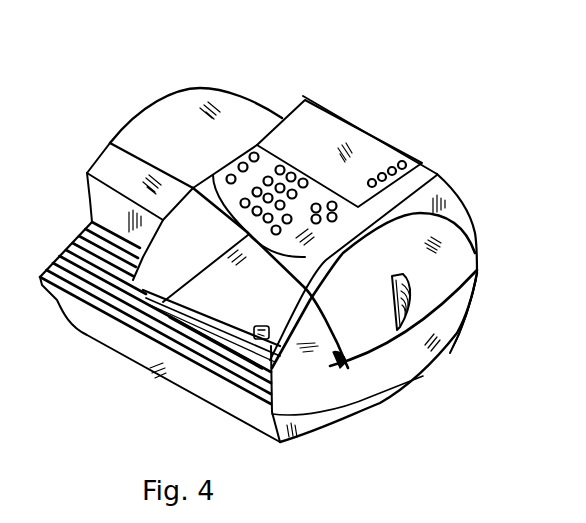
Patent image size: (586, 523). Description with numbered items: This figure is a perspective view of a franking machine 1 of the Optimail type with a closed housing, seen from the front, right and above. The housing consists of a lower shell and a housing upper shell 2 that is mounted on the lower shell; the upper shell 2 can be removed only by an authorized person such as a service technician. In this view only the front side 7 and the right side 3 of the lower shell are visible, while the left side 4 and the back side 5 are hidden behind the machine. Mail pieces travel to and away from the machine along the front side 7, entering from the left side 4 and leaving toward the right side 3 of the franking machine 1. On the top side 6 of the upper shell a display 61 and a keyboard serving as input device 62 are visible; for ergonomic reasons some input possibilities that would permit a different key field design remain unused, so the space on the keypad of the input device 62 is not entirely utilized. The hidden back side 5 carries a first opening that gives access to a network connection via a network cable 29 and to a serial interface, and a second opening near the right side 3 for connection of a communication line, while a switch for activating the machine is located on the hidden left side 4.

The franking machine 1 is at (249, 85).
The upper shell 2 is at (452, 262).
The right side 3 is at (428, 351).
The left side 4 is at (90, 199).
The back side 5 is at (470, 330).
The top side 6 is at (283, 113).
The front side 7 is at (88, 335).
The network cable 29 is at (402, 310).
The display 61 is at (306, 139).
The input device 62 is at (248, 237).